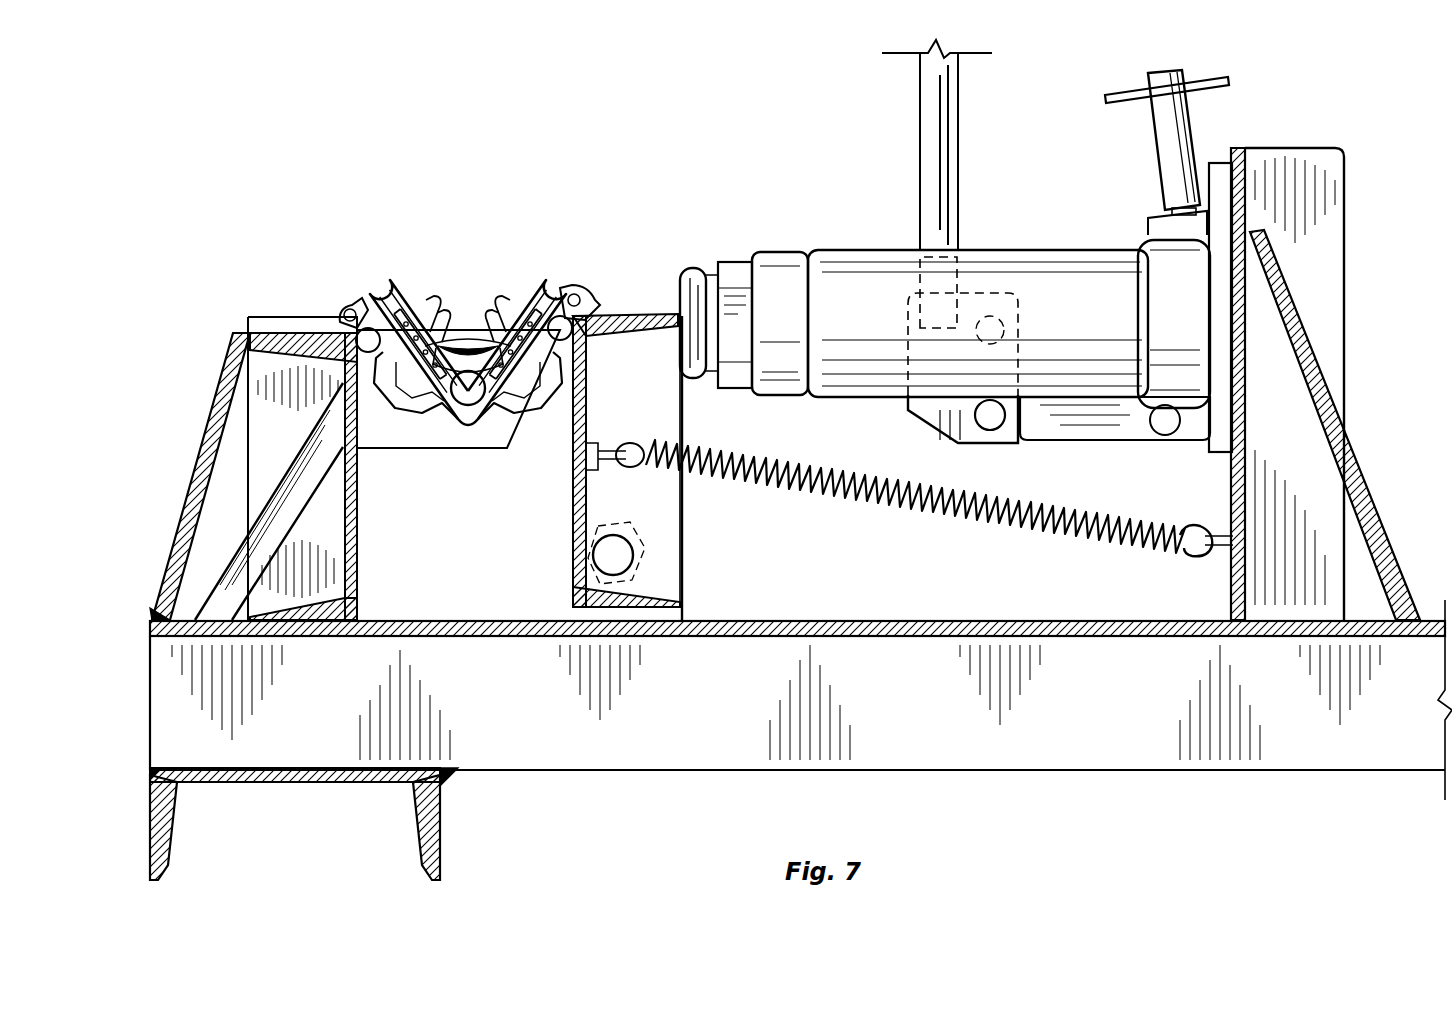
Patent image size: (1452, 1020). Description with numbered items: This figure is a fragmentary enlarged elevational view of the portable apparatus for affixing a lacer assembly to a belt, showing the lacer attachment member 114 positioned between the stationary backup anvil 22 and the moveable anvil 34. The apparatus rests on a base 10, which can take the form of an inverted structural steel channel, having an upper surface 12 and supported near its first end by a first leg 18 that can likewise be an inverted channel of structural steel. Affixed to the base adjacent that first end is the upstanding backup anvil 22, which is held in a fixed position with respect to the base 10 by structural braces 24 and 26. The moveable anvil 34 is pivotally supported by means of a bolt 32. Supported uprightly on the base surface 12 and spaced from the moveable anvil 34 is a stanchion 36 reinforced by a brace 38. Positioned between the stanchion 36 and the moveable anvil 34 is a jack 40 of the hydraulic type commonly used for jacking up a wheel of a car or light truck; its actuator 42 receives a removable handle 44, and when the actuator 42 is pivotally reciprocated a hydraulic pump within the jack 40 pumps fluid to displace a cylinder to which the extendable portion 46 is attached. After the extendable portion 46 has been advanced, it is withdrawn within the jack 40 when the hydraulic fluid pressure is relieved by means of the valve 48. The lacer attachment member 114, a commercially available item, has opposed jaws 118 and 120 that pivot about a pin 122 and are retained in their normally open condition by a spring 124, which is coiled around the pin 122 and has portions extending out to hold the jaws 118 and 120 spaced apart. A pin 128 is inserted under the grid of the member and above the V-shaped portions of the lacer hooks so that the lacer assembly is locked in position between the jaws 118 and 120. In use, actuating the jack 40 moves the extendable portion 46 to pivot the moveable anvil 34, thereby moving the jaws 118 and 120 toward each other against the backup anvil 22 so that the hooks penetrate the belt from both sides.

The base 10 is at (1052, 622).
The upper surface 12 is at (890, 600).
The first leg 18 is at (440, 812).
The backup anvil 22 is at (357, 537).
The structural brace 24 is at (225, 565).
The structural brace 26 is at (200, 470).
The bolt 32 is at (622, 556).
The moveable anvil 34 is at (575, 510).
The stanchion 36 is at (1246, 152).
The brace 38 is at (1330, 390).
The jack 40 is at (1030, 255).
The actuator 42 is at (935, 420).
The removable handle 44 is at (932, 165).
The extendable portion 46 is at (702, 270).
The valve 48 is at (1168, 132).
The lacer attachment member 114 is at (491, 224).
The jaw 118 is at (555, 288).
The jaw 120 is at (335, 315).
The pin 122 is at (463, 392).
The spring 124 is at (528, 395).
The pin 128 is at (466, 342).